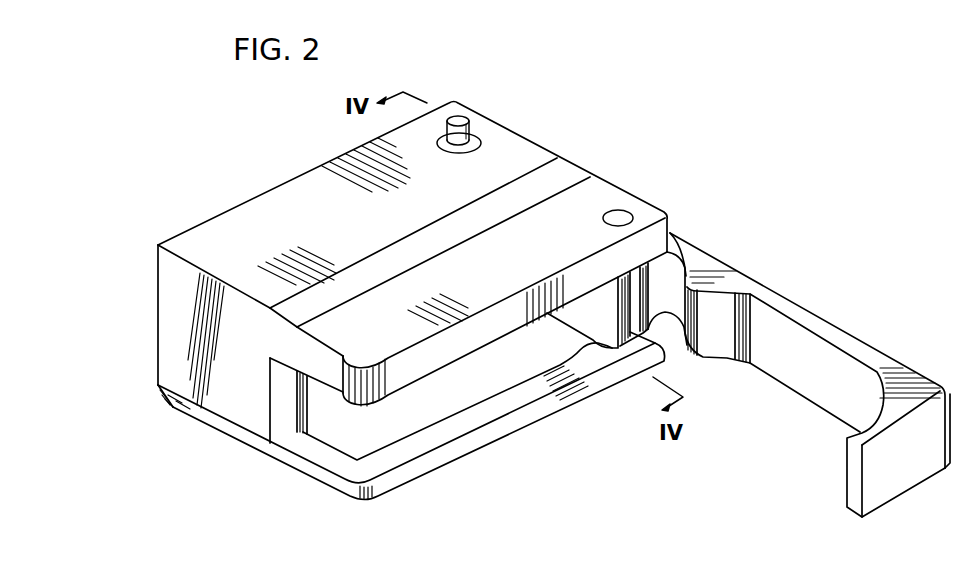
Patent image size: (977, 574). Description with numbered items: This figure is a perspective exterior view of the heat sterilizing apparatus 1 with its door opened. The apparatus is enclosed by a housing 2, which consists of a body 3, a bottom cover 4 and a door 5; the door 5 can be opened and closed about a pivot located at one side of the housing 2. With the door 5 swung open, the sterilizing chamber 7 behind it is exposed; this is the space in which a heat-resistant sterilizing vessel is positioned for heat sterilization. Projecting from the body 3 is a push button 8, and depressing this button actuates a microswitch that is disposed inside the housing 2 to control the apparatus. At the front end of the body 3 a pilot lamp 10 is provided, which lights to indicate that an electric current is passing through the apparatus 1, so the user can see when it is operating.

The housing body 1 is at (313, 170).
The housing 2 is at (157, 303).
The body 3 is at (535, 148).
The bottom cover 4 is at (263, 448).
The door 5 is at (740, 268).
The sterilizing chamber 7 is at (407, 423).
The push button 8 is at (463, 116).
The pilot lamp 10 is at (623, 212).